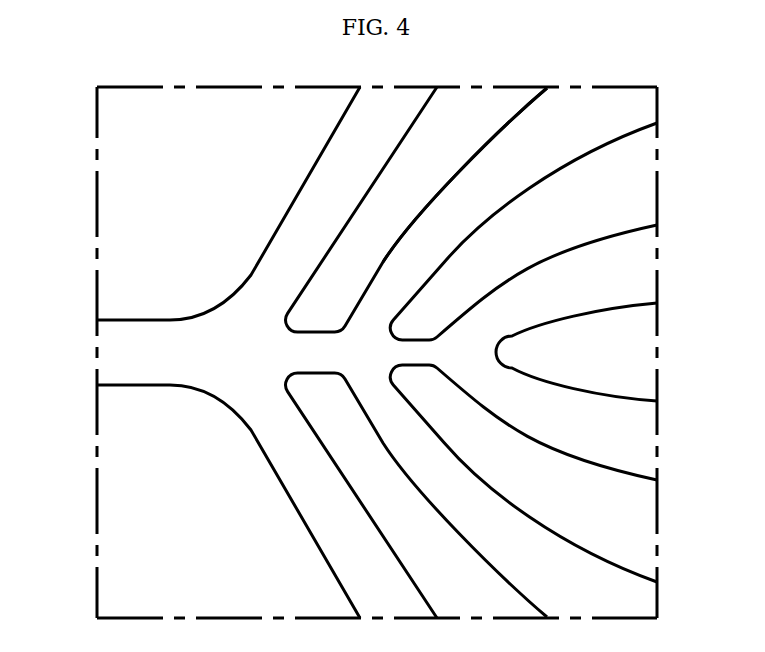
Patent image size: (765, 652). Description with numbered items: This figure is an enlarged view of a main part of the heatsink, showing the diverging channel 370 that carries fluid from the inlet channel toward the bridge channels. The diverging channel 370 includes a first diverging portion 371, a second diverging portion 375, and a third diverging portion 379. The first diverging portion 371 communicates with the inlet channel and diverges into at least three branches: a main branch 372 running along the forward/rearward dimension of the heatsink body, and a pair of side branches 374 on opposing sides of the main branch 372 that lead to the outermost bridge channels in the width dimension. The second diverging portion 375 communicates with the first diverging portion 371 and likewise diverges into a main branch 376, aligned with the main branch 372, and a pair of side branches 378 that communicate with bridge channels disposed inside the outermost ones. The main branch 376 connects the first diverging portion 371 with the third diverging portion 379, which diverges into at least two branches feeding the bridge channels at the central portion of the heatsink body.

The diverging channel 370 is at (195, 149).
The first diverging portion 371 is at (216, 419).
The main branch 372 is at (318, 338).
The side branch 374 is at (286, 215).
The second diverging portion 375 is at (336, 408).
The main branch 376 is at (413, 348).
The side branch 378 is at (462, 173).
The third diverging portion 379 is at (513, 352).